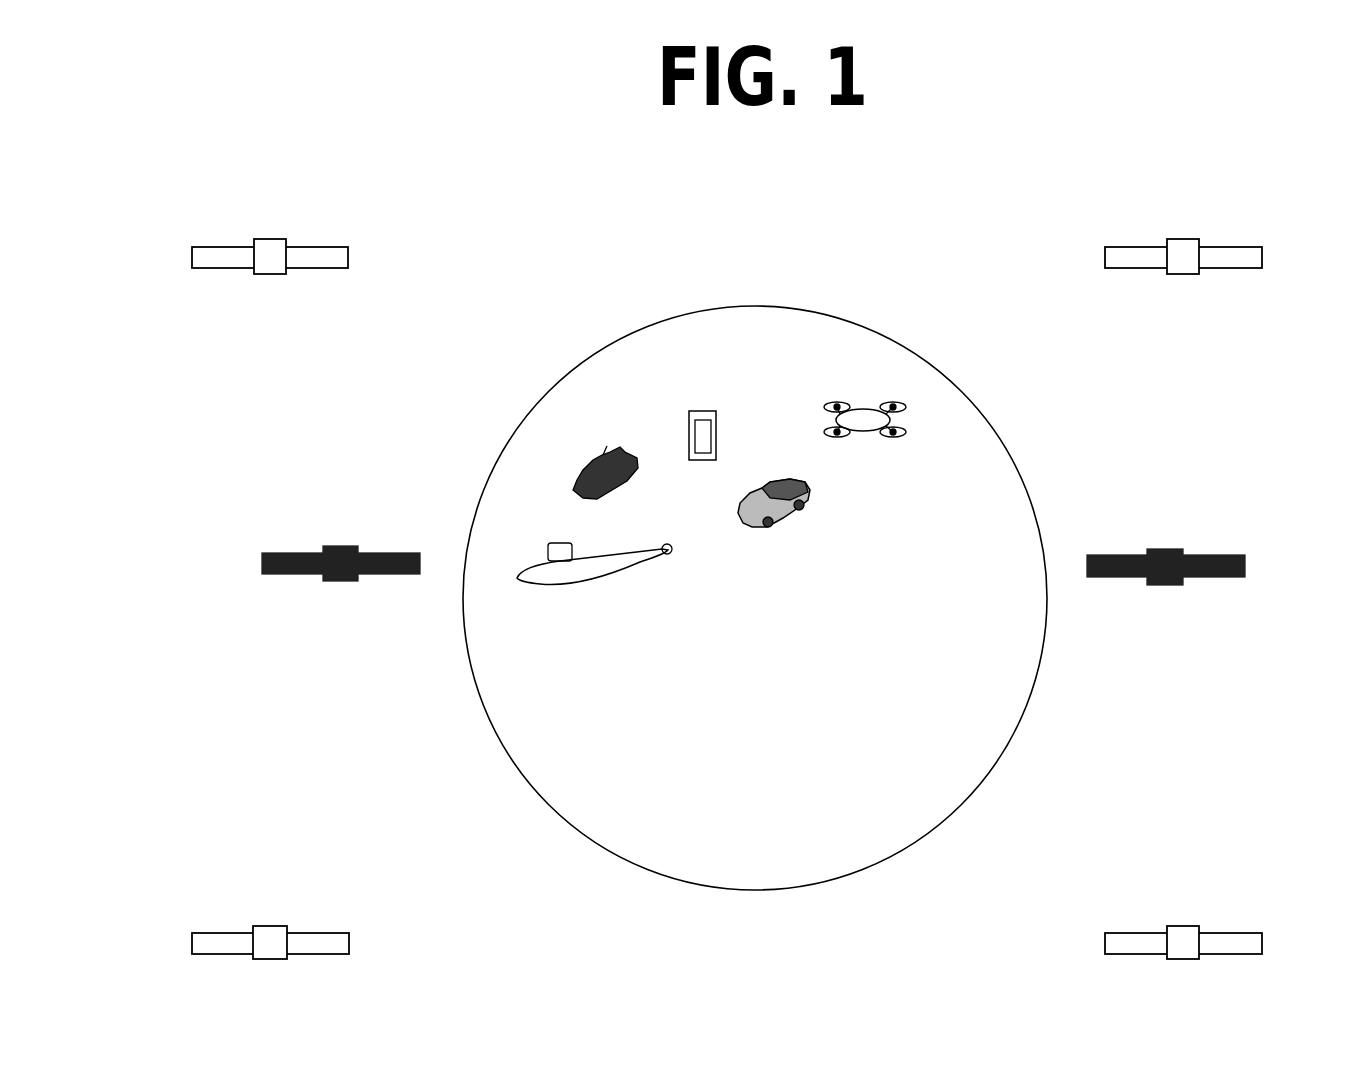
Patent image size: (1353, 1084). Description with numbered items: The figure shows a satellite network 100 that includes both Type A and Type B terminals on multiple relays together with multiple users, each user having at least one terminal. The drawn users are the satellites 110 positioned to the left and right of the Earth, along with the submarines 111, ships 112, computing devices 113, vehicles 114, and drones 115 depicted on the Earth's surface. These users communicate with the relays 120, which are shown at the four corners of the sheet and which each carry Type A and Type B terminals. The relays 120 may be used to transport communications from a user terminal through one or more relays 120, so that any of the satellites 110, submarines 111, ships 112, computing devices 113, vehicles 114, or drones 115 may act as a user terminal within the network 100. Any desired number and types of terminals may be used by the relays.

The satellite network 100 is at (340, 146).
The satellites 110 is at (338, 546).
The relays 120 is at (208, 247).
The submarines 111 is at (555, 543).
The ships 112 is at (598, 457).
The computing devices 113 is at (697, 412).
The vehicles 114 is at (777, 478).
The drones 115 is at (865, 408).